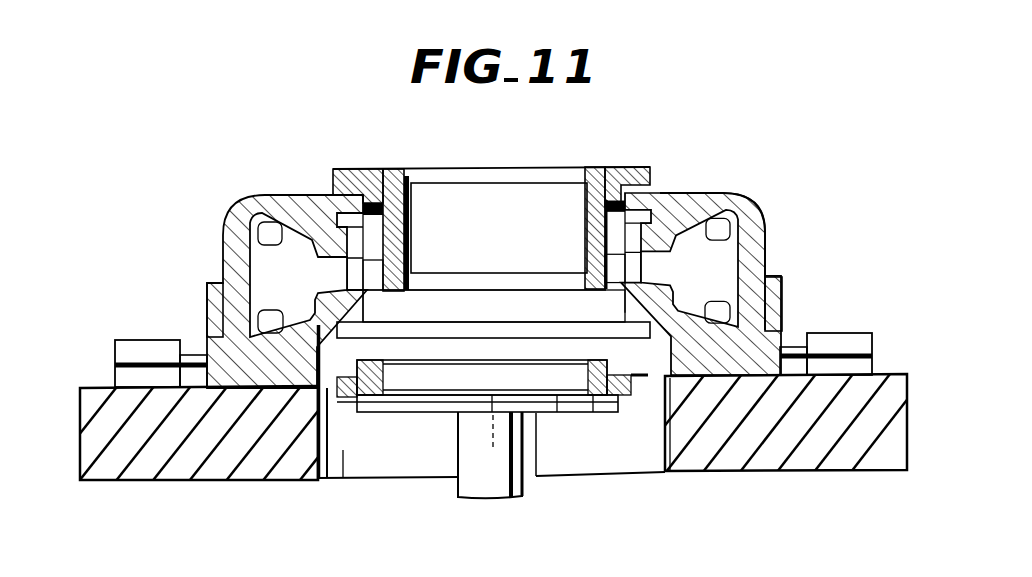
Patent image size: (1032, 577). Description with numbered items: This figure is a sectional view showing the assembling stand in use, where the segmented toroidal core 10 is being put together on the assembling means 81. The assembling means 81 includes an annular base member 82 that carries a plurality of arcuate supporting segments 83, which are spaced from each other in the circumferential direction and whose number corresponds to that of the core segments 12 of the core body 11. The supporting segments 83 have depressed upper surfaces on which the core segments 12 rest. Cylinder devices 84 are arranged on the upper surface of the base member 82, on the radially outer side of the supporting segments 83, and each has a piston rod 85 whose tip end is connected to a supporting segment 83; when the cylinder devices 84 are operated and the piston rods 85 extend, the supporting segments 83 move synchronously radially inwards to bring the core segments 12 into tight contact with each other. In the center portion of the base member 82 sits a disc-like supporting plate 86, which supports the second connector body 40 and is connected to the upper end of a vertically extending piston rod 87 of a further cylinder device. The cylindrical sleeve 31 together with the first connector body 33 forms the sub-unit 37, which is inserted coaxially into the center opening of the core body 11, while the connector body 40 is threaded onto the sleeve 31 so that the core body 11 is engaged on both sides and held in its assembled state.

The toroidal core 10 is at (683, 175).
The core body 11 is at (757, 205).
The core segments 12 is at (762, 245).
The cylindrical sleeve 31 is at (432, 238).
The first connector body 33 is at (333, 185).
The sub-unit 37 is at (428, 220).
The second connector body 40 is at (400, 382).
The assembling means 81 is at (790, 298).
The annular base member 82 is at (288, 457).
The supporting segments 83 is at (207, 292).
The cylinder devices 84 is at (122, 350).
The piston rod 85 is at (198, 357).
The supporting plate 86 is at (547, 405).
The piston rod 87 is at (458, 445).